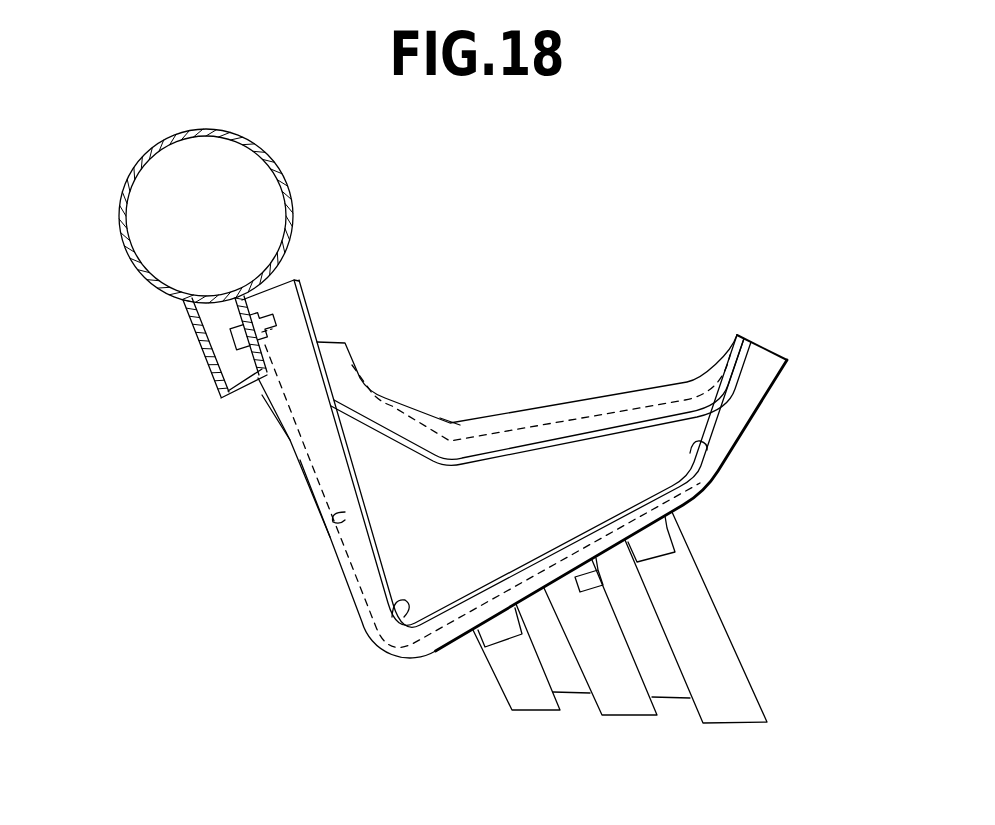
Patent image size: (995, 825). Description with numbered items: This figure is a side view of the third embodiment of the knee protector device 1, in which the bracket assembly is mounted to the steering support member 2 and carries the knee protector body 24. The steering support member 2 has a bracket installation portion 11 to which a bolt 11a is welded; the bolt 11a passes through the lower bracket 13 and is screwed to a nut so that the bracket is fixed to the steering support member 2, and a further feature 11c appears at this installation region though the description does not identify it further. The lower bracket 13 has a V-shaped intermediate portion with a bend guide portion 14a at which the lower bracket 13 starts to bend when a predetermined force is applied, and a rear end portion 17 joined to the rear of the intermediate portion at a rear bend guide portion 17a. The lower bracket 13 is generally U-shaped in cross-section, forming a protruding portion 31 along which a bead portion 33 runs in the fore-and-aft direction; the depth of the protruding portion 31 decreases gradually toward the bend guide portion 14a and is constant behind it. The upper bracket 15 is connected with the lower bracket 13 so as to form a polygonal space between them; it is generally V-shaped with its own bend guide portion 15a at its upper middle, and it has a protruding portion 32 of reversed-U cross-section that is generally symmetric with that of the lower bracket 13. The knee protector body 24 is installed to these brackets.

The knee protector device 1 is at (542, 288).
The steering support member 2 is at (206, 118).
The bracket installation portion 11 is at (186, 350).
The bolt 11a is at (274, 331).
The bracket side wall 11c is at (278, 420).
The lower bracket 13 is at (332, 585).
The bend guide portion 14a is at (388, 614).
The upper bracket 15 is at (588, 384).
The bend guide portion 15a is at (456, 420).
The rear end portion 17 is at (757, 401).
The rear bend guide portion 17a is at (707, 450).
The knee protector body 24 is at (716, 605).
The protruding portion 31 is at (315, 503).
The protruding portion 32 is at (683, 402).
The bead portion 33 is at (345, 516).